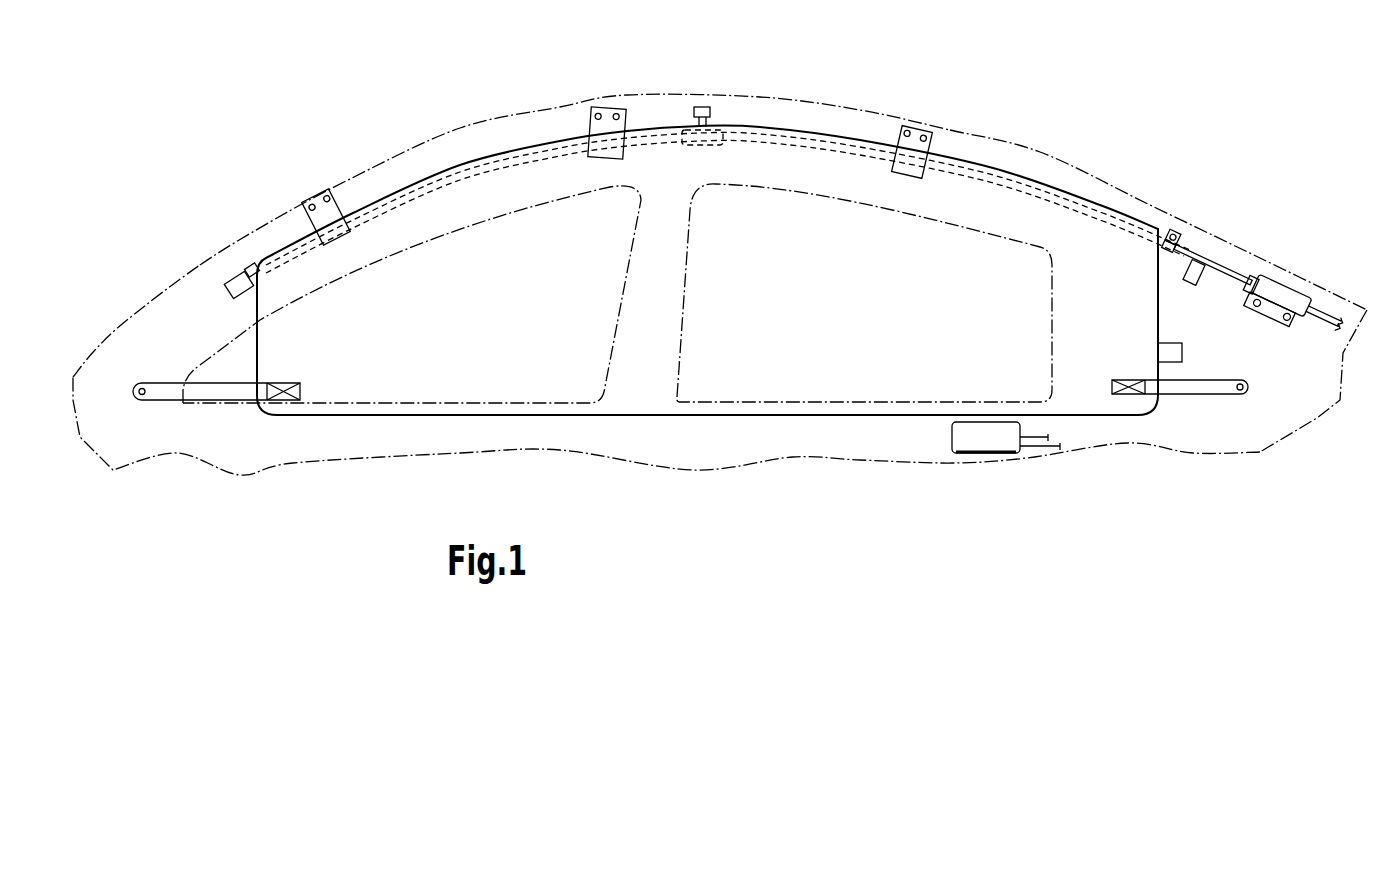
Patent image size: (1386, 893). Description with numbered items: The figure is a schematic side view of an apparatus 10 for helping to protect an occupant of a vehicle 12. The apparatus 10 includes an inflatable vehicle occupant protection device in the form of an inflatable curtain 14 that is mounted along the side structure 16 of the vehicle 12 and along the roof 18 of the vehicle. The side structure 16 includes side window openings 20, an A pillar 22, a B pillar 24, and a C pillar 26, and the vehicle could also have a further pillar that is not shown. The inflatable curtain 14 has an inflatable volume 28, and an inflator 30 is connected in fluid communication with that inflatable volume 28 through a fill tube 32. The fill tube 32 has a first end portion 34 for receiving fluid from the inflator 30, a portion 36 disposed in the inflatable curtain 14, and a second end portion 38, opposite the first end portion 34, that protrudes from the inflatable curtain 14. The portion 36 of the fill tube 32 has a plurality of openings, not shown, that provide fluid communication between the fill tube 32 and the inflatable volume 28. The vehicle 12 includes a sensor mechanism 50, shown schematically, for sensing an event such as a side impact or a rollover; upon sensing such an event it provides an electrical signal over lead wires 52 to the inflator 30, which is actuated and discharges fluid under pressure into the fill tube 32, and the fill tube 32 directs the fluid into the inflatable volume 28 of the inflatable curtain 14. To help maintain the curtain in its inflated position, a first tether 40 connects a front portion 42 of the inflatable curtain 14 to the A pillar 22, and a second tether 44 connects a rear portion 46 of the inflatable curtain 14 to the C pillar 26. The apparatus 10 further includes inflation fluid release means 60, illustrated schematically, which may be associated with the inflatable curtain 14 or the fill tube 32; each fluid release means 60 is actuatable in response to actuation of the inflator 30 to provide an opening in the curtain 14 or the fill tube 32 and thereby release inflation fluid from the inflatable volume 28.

The apparatus 10 is at (388, 108).
The vehicle 12 is at (348, 183).
The inflatable curtain 14 is at (345, 363).
The side structure 16 is at (707, 447).
The roof 18 is at (875, 113).
The side window openings 20 is at (548, 392).
The A pillar 22 is at (200, 307).
The B pillar 24 is at (662, 265).
The C pillar 26 is at (1198, 357).
The inflatable volume 28 is at (948, 260).
The inflator 30 is at (1280, 287).
The fill tube 32 is at (563, 147).
The first end portion 34 is at (1243, 277).
The portion 36 is at (777, 140).
The second end portion 38 is at (252, 267).
The first tether 40 is at (162, 393).
The front portion 42 is at (282, 350).
The second tether 44 is at (1187, 388).
The rear portion 46 is at (1143, 320).
The sensor mechanism 50 is at (988, 440).
The lead wires 52 is at (1320, 310).
The inflation fluid release means 60 is at (705, 108).